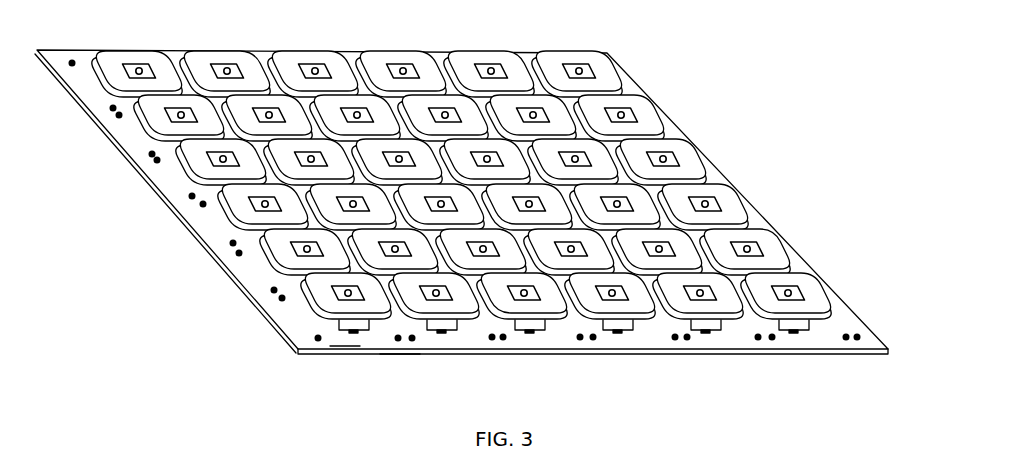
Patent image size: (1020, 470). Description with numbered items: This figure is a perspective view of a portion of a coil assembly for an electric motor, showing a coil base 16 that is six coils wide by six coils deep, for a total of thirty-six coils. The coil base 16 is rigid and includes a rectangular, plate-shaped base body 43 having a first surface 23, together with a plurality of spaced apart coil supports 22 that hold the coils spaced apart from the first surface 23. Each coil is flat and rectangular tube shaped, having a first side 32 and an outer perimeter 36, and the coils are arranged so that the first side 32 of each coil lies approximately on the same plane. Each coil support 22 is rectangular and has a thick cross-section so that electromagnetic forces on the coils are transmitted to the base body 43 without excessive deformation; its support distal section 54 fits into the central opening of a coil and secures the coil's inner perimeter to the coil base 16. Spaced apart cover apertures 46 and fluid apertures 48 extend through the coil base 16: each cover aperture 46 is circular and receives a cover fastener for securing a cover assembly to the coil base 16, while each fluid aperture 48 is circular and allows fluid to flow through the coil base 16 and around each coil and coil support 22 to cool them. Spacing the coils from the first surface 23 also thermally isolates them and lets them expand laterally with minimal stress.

The coil base 16 is at (242, 272).
The coil support 22 is at (537, 331).
The first surface 23 is at (343, 343).
The first side 32 is at (320, 292).
The outer perimeter 36 is at (313, 305).
The base body 43 is at (397, 362).
The cover aperture 46 is at (503, 342).
The fluid aperture 48 is at (447, 336).
The support distal section 54 is at (632, 296).